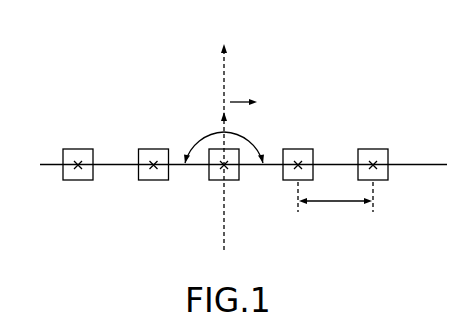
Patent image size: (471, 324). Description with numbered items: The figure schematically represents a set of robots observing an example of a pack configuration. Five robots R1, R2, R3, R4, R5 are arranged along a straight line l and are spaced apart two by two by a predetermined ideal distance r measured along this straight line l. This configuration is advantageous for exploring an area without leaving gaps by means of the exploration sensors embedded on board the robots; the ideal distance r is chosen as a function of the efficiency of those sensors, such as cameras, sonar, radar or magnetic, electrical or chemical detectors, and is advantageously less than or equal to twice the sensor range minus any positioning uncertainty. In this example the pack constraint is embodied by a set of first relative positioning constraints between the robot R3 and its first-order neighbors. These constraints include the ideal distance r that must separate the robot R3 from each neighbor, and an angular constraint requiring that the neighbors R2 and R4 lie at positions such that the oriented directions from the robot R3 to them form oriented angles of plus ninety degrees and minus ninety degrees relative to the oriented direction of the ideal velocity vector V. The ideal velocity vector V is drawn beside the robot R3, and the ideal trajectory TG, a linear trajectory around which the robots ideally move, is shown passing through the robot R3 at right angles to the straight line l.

The robot R1 is at (73, 149).
The robot R2 is at (152, 149).
The robot R3 is at (222, 149).
The robot R4 is at (293, 149).
The robot R5 is at (368, 149).
The ideal trajectory TG is at (226, 133).
The ideal velocity vector V is at (243, 116).
The ideal distance r is at (335, 206).
The straight line l is at (415, 165).